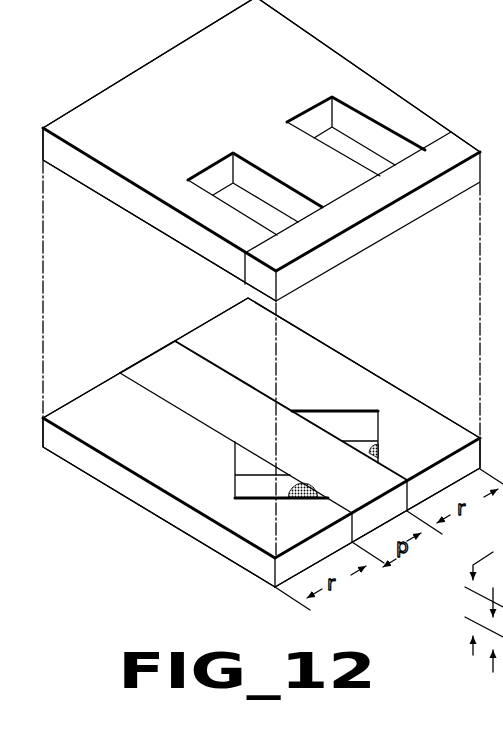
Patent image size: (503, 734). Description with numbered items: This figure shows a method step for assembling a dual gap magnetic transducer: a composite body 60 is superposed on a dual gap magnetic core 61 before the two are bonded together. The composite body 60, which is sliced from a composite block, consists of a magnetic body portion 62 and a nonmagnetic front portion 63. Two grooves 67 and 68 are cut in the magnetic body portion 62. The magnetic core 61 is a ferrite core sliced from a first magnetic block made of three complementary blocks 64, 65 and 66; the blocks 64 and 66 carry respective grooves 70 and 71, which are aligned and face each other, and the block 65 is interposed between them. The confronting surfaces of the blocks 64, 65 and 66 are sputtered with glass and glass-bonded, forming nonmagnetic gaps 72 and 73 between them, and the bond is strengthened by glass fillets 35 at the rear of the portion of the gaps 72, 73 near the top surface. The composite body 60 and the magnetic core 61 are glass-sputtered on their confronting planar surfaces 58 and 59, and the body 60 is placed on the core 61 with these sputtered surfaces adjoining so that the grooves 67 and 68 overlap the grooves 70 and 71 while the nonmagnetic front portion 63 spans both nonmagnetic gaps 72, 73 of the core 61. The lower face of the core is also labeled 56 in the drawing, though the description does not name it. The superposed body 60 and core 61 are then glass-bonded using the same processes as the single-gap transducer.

The composite body 60 is at (272, 150).
The magnetic body portion 62 is at (222, 108).
The nonmagnetic front portion 63 is at (458, 144).
The groove 67 is at (340, 142).
The groove 68 is at (264, 212).
The planar surface 58 is at (97, 194).
The magnetic core 61 is at (261, 442).
The block 64 is at (245, 354).
The block 65 is at (182, 388).
The block 66 is at (123, 432).
The planar surface 59 is at (418, 404).
The front face of lower block 56 is at (144, 508).
The groove 70 is at (325, 422).
The groove 71 is at (247, 487).
The nonmagnetic gap 72 is at (396, 474).
The nonmagnetic gap 73 is at (342, 513).
The glass fillet 35 is at (362, 456).